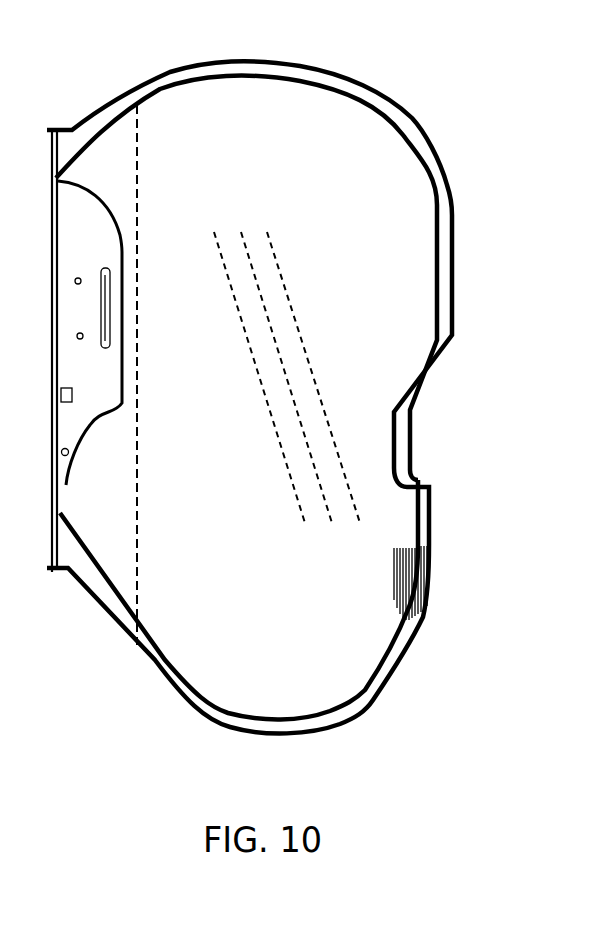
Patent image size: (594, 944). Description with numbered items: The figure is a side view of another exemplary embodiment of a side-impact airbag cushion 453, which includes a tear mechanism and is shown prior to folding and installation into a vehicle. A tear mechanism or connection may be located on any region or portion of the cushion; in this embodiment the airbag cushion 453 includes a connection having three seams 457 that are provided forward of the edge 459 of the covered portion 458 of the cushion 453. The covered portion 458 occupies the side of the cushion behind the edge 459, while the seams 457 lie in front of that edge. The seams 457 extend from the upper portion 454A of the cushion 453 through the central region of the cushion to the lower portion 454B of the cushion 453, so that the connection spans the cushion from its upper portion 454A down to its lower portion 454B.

The airbag cushion 453 is at (415, 226).
The upper portion 454A is at (246, 278).
The lower portion 454B is at (239, 600).
The seams 457 is at (249, 268).
The covered portion 458 is at (90, 348).
The edge 459 is at (137, 476).